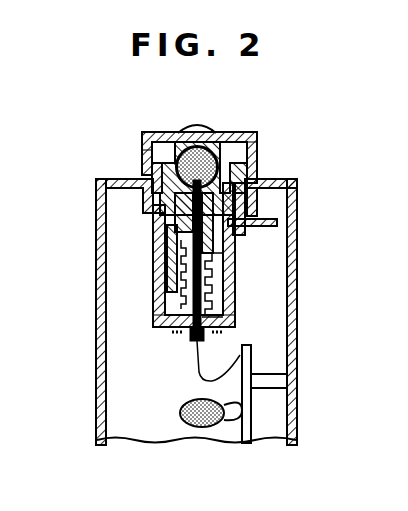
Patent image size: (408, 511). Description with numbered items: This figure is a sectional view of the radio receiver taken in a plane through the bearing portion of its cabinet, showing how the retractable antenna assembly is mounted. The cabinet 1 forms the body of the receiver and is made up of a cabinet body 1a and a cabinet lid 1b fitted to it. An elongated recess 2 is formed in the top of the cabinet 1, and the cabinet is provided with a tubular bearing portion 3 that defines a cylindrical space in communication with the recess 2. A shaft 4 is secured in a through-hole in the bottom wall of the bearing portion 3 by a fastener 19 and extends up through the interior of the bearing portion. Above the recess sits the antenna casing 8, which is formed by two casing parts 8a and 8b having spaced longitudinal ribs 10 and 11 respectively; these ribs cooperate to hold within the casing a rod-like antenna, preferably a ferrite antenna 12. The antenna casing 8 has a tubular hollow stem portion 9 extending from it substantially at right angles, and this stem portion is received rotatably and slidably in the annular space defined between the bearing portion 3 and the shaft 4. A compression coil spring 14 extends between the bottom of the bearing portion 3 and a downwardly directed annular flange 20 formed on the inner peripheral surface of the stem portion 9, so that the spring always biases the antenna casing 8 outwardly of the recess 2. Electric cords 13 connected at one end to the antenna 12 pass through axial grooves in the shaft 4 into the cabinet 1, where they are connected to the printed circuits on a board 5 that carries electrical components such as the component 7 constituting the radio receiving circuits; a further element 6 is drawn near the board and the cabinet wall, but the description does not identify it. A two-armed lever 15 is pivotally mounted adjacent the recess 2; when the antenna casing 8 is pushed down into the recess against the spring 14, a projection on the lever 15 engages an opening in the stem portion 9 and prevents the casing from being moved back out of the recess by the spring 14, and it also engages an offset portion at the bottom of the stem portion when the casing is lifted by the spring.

The cabinet 1 is at (191, 334).
The cabinet body 1a is at (297, 320).
The cabinet lid 1b is at (97, 392).
The elongated recess 2 is at (252, 189).
The tubular bearing portion 3 is at (160, 321).
The shaft 4 is at (170, 260).
The board 5 is at (245, 445).
The guide bracket 6 is at (280, 375).
The electrical component 7 is at (180, 414).
The antenna casing 8 is at (242, 124).
The casing part 8a is at (148, 165).
The casing part 8b is at (158, 133).
The tubular hollow stem portion 9 is at (163, 236).
The longitudinal ribs 10 is at (220, 172).
The longitudinal ribs 11 is at (201, 127).
The ferrite antenna 12 is at (251, 151).
The electric cords 13 is at (200, 379).
The compression coil spring 14 is at (214, 292).
The two-armed lever 15 is at (262, 227).
The fastener 19 is at (190, 337).
The annular flange 20 is at (178, 275).